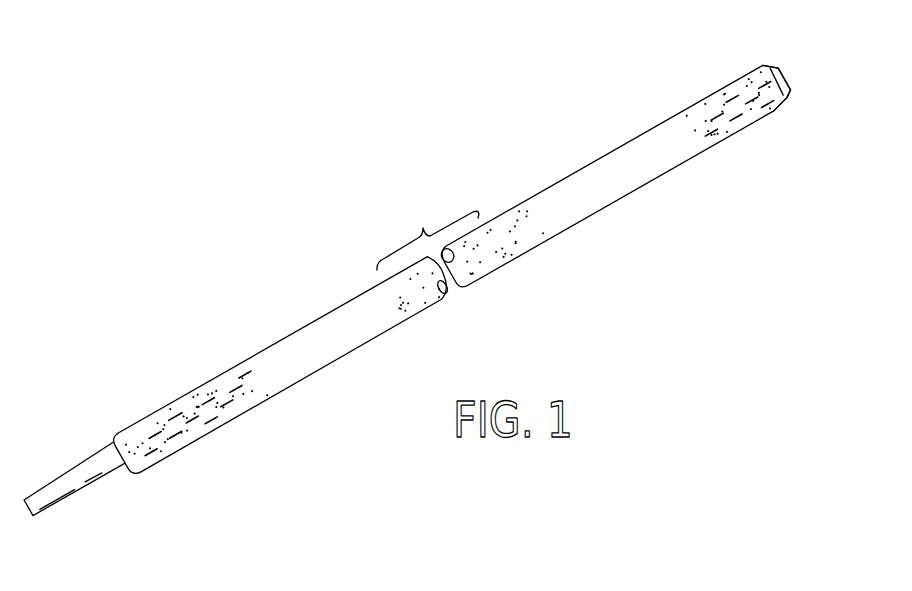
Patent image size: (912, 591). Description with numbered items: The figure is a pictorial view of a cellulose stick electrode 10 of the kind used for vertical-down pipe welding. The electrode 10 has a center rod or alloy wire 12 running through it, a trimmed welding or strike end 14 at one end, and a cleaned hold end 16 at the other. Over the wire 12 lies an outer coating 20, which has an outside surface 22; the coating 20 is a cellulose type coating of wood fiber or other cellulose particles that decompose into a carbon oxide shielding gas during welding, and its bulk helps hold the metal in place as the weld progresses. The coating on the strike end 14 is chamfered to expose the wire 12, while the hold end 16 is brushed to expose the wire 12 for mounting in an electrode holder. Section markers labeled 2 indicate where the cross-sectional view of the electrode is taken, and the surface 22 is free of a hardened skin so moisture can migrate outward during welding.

The stick electrode 10 is at (313, 300).
The center rod or alloy wire 12 is at (102, 472).
The strike end 14 is at (787, 77).
The hold end 16 is at (57, 480).
The outer coating 20 is at (315, 372).
The outside surface 22 is at (543, 245).
The section line 2- 2 is at (602, 148).